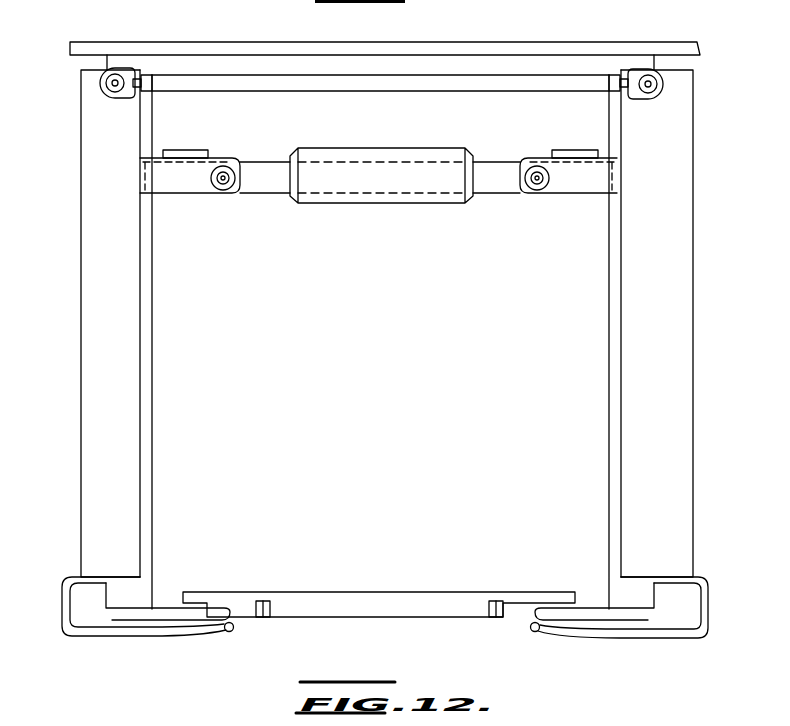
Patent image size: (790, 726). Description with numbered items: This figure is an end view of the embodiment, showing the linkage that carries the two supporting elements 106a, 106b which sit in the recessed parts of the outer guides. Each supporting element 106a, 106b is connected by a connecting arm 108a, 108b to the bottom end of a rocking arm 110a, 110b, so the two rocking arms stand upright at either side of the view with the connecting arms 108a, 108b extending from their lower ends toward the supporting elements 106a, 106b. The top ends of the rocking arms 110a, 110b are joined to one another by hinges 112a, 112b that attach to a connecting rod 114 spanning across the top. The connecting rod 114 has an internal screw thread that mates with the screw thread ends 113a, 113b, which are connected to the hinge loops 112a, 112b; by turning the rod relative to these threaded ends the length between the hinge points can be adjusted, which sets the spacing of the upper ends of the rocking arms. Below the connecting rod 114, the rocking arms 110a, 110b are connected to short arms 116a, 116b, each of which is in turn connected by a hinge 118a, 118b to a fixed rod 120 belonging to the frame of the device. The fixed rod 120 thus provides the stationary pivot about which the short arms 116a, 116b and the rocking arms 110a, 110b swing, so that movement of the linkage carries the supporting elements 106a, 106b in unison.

The supporting element 106a is at (531, 631).
The supporting element 106b is at (233, 630).
The connecting arm 108a is at (656, 636).
The connecting arm 108b is at (120, 634).
The rocking arm 110a is at (677, 355).
The rocking arm 110b is at (92, 458).
The hinge 112a is at (663, 86).
The hinge 112b is at (103, 92).
The screw thread end 113a is at (613, 78).
The screw thread end 113b is at (148, 78).
The connecting rod 114 is at (416, 81).
The short arm 116a is at (575, 180).
The short arm 116b is at (178, 182).
The hinge 118a is at (530, 166).
The hinge 118b is at (232, 188).
The fixed rod 120 is at (487, 185).